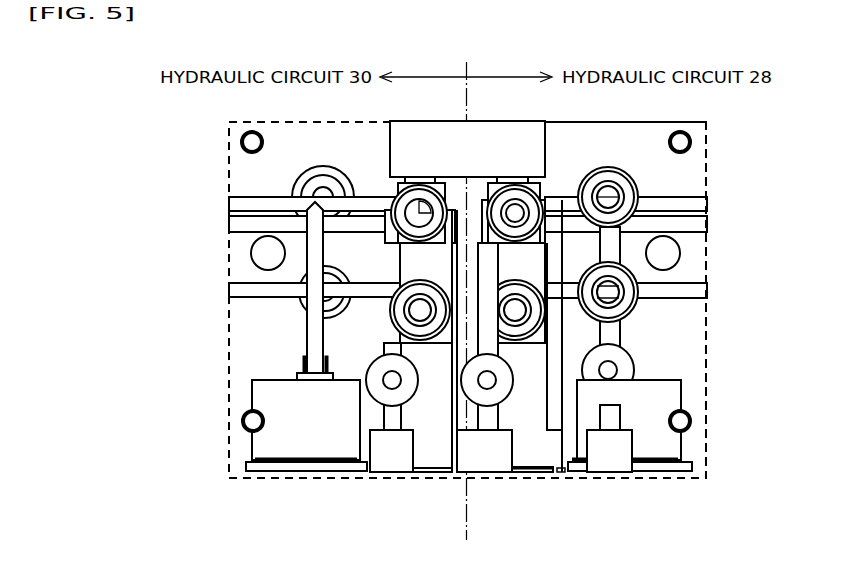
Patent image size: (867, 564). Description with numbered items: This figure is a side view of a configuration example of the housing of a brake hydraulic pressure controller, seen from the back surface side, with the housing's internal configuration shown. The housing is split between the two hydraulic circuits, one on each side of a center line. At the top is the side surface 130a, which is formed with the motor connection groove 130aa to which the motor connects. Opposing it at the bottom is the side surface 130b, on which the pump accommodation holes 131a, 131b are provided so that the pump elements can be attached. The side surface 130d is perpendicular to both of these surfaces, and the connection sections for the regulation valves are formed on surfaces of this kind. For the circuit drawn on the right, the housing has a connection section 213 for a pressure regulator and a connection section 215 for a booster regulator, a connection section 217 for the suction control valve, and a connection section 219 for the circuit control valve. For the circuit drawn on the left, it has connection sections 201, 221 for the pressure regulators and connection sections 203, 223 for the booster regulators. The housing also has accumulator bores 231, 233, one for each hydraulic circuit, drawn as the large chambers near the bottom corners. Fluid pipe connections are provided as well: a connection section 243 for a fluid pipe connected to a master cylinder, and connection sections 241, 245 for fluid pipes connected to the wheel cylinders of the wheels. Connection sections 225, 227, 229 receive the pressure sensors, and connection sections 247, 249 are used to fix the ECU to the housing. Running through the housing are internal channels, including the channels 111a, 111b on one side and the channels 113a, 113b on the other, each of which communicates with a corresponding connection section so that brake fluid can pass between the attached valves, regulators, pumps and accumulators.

The internal channel 111a is at (560, 223).
The internal channel 111b is at (640, 300).
The internal channel 113a is at (367, 227).
The internal channel 113b is at (367, 292).
The side surface 130a is at (657, 122).
The motor connection groove 130aa is at (475, 148).
The side surface 130b is at (250, 477).
The side surface 130d is at (697, 395).
The pump accommodation hole 131a is at (432, 444).
The pump accommodation hole 131b is at (532, 444).
The connection section 201 is at (307, 182).
The connection section 203 is at (303, 273).
The connection section 213 is at (627, 187).
The connection section 215 is at (627, 283).
The connection section 217 is at (527, 203).
The connection section 219 is at (538, 318).
The connection section 221 is at (393, 198).
The connection section 223 is at (395, 318).
The connection section 225 is at (623, 368).
The connection section 227 is at (498, 390).
The connection section 229 is at (380, 367).
The accumulator bore 231 is at (257, 447).
The accumulator bore 233 is at (673, 448).
The connection section 241 is at (608, 457).
The connection section 243 is at (485, 457).
The connection section 245 is at (393, 457).
The connection section 247 is at (268, 253).
The connection section 249 is at (663, 257).